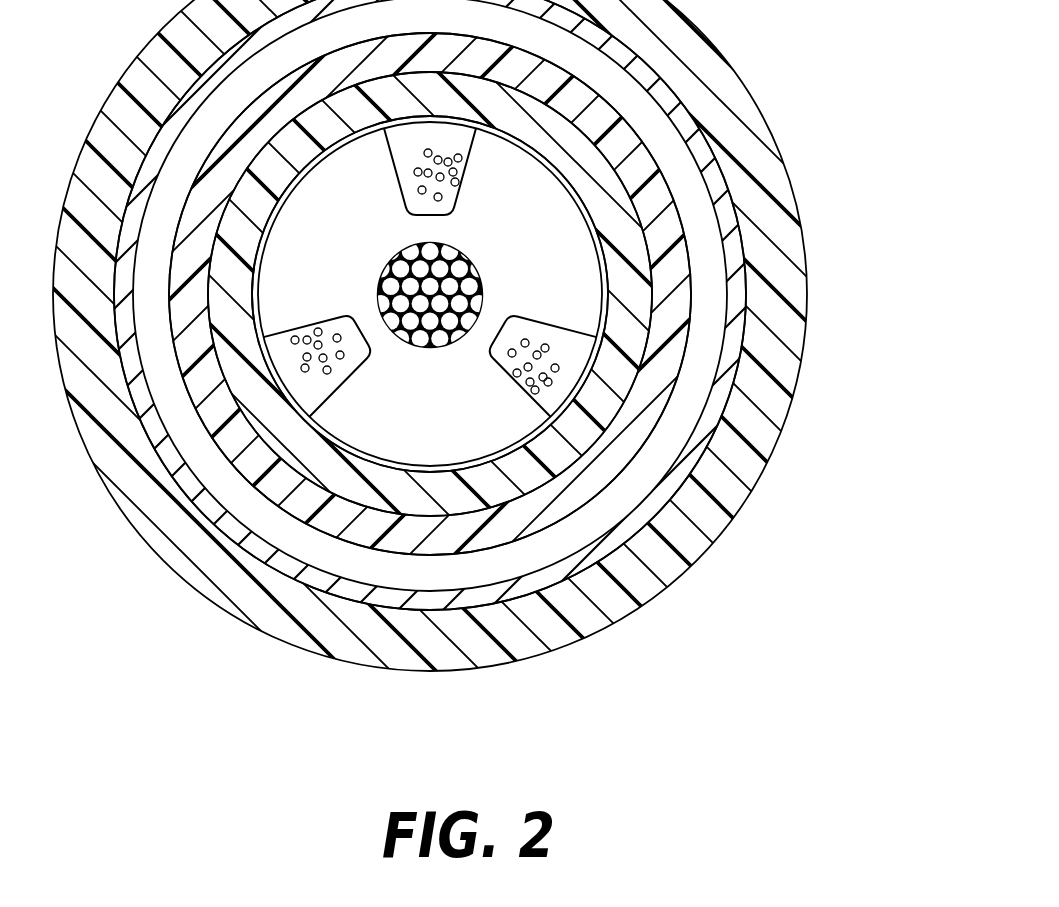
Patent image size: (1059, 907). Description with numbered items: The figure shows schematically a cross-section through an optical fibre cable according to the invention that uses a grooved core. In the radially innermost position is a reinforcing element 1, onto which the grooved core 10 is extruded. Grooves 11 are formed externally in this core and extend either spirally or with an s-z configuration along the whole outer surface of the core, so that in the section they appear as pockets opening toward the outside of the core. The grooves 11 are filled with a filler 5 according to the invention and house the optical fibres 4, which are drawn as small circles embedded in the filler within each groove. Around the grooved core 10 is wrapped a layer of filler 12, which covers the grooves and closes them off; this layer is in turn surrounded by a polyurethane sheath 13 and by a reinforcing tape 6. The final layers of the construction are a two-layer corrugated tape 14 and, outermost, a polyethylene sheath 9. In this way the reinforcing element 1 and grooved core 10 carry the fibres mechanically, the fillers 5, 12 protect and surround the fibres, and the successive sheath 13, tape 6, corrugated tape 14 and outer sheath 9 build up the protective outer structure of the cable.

The reinforcing element 1 is at (389, 288).
The optical fibres 4 is at (509, 356).
The filler 5 is at (573, 362).
The reinforcing tape 6 is at (573, 497).
The outer polyethylene sheath 9 is at (520, 640).
The grooved core 10 is at (527, 227).
The grooves 11 is at (523, 321).
The layer of filler 12 is at (573, 408).
The polyurethane sheath 13 is at (573, 440).
The two-layer corrugated tape 14 is at (573, 533).